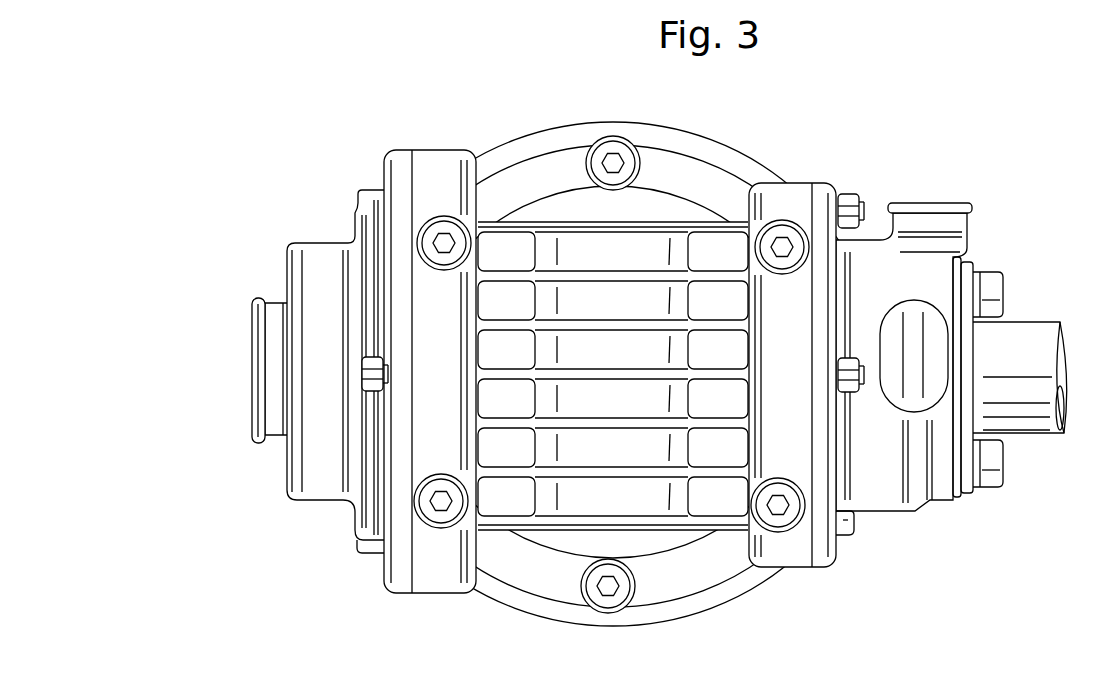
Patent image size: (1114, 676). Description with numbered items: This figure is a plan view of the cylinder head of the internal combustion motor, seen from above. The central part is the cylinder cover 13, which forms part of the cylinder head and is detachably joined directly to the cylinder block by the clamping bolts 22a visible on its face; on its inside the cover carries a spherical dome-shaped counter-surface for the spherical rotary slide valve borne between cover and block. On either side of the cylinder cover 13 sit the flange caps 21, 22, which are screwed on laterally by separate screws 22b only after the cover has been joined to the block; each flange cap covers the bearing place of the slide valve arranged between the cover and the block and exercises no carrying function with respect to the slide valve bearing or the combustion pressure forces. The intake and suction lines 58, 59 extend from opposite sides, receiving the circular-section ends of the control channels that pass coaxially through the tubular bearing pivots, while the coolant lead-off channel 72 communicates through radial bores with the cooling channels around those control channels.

The cylinder cover 13 is at (653, 247).
The flange cap 21 is at (318, 478).
The flange cap 22 is at (887, 493).
The clamping bolt 22a is at (613, 150).
The screw 22b is at (367, 370).
The intake line 58 is at (252, 366).
The suction line 59 is at (1070, 397).
The coolant lead-off channel 72 is at (960, 229).